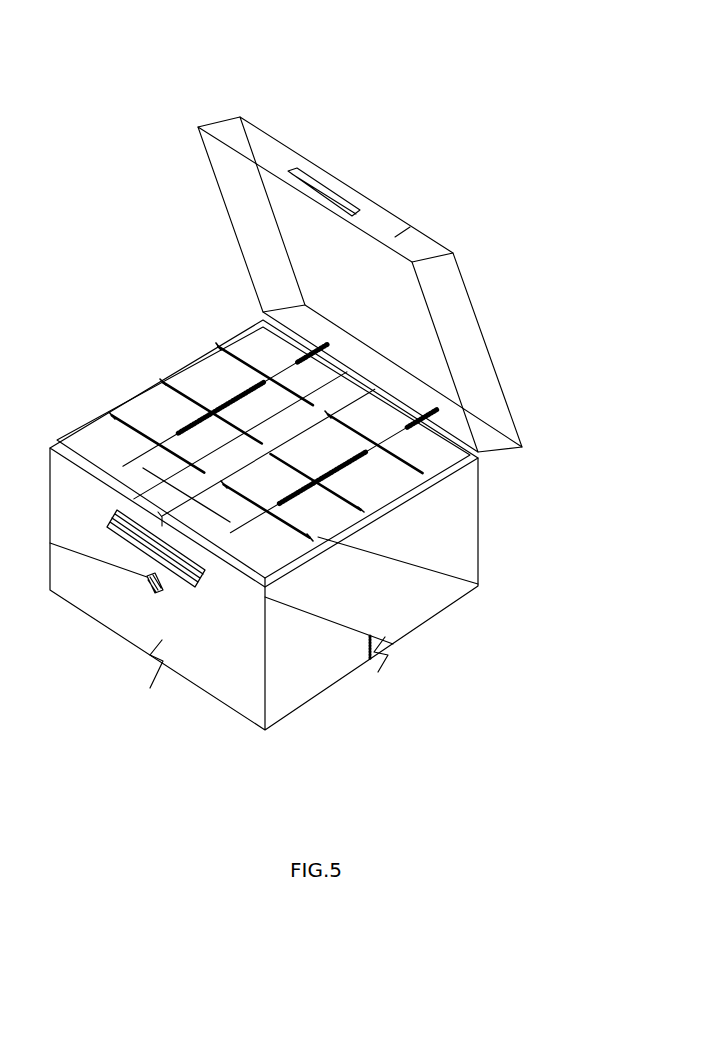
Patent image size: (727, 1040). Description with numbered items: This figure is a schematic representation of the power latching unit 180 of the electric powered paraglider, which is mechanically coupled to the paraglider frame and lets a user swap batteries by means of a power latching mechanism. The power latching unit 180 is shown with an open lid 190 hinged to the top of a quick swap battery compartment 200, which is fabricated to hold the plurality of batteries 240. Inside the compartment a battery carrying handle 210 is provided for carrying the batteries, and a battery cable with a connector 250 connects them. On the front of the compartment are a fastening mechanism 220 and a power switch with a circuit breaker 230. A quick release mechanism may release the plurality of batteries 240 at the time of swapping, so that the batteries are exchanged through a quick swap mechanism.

The power latching unit 180 is at (346, 105).
The lid 190 is at (423, 250).
The quick swap battery compartment 200 is at (458, 468).
The battery carrying handle 210 is at (310, 538).
The fastening mechanism 220 is at (199, 584).
The power switch with a circuit breaker 230 is at (153, 580).
The plurality of batteries 240 is at (148, 411).
The battery cable with a connector 250 is at (218, 395).